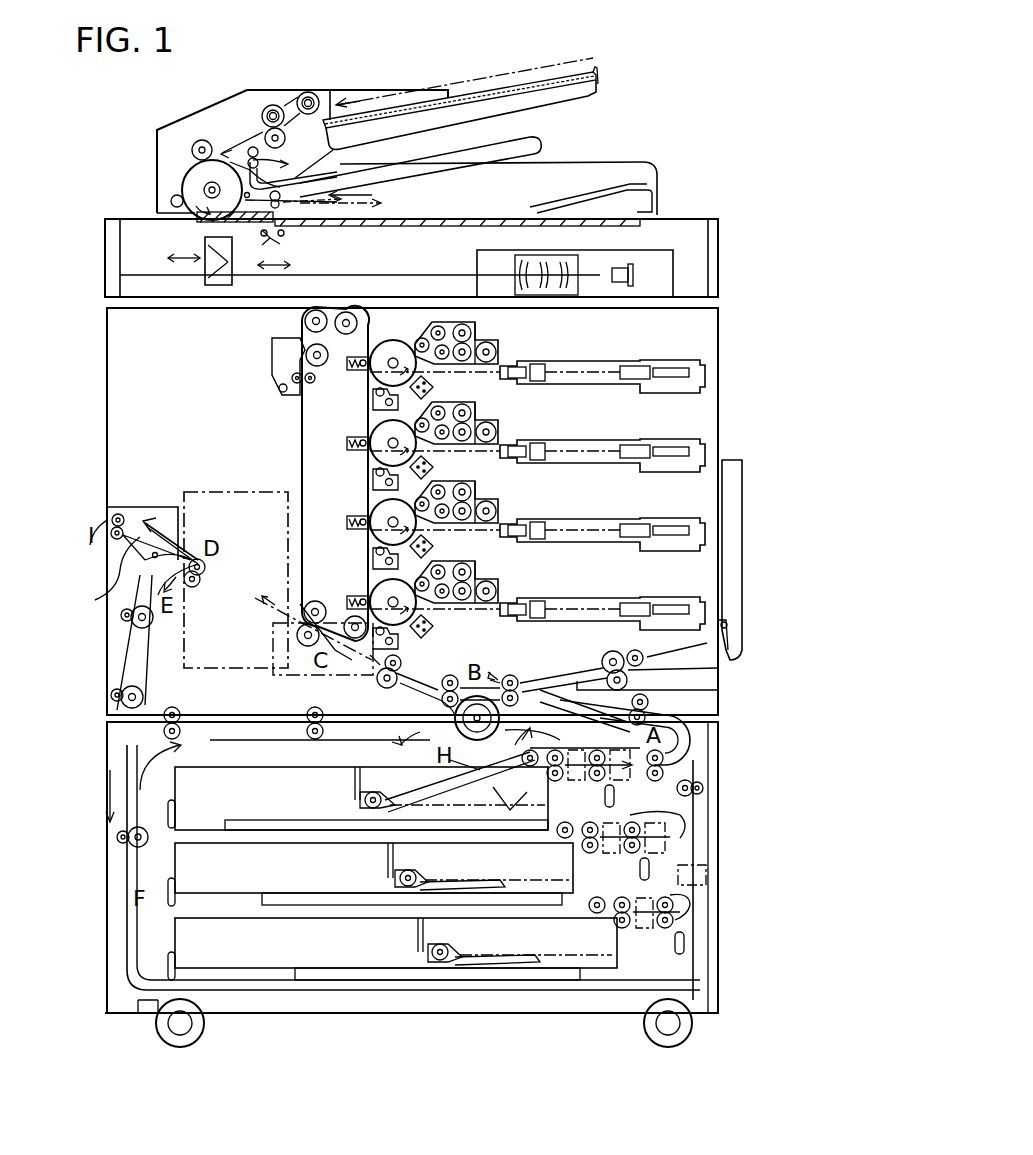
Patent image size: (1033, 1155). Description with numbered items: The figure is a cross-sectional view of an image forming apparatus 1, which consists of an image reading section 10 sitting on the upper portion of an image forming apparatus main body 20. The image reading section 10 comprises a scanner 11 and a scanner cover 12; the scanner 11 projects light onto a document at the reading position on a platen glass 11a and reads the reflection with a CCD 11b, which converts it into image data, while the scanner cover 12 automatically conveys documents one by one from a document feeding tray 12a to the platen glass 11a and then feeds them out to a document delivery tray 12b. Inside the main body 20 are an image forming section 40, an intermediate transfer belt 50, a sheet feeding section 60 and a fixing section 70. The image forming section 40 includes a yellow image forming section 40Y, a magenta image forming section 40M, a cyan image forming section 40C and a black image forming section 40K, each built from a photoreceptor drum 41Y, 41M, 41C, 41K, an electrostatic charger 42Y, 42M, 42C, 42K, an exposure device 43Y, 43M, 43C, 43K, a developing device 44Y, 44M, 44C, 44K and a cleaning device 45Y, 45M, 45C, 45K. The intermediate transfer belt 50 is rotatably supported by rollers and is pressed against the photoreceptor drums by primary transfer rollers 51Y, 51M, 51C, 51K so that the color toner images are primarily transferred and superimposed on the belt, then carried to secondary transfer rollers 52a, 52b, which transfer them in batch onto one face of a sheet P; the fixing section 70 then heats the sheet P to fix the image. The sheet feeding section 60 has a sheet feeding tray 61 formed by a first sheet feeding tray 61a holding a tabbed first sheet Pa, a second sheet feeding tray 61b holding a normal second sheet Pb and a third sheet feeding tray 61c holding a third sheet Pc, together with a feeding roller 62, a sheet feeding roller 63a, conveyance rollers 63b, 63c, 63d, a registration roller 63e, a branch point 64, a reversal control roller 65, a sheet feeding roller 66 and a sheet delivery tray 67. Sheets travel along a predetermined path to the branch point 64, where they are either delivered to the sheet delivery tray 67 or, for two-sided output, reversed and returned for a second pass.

The image forming apparatus 1 is at (138, 136).
The image reading section 10 is at (407, 258).
The scanner 11 is at (720, 228).
The platen glass 11a is at (620, 215).
The CCD 11b is at (680, 272).
The scanner cover 12 is at (212, 113).
The document feeding tray 12a is at (607, 55).
The document delivery tray 12b is at (530, 140).
The image forming apparatus main body 20 is at (97, 358).
The image forming section 40 is at (800, 352).
The yellow image forming section 40Y is at (712, 372).
The magenta image forming section 40M is at (712, 448).
The cyan image forming section 40C is at (708, 525).
The black image forming section 40K is at (702, 596).
The photoreceptor drum 41Y is at (393, 358).
The photoreceptor drum 41M is at (372, 440).
The photoreceptor drum 41C is at (372, 518).
The photoreceptor drum 41K is at (372, 590).
The electrostatic charger 42Y is at (433, 387).
The electrostatic charger 42M is at (433, 467).
The electrostatic charger 42C is at (433, 546).
The electrostatic charger 42K is at (433, 626).
The exposure device 43Y is at (615, 347).
The exposure device 43M is at (605, 424).
The exposure device 43C is at (608, 504).
The exposure device 43K is at (610, 584).
The developing device 44Y is at (498, 345).
The developing device 44M is at (498, 418).
The developing device 44C is at (498, 495).
The developing device 44K is at (498, 573).
The cleaning device 45Y is at (373, 405).
The cleaning device 45M is at (373, 486).
The cleaning device 45C is at (373, 565).
The cleaning device 45K is at (400, 645).
The intermediate transfer belt 50 is at (302, 443).
The primary transfer roller 51Y is at (348, 366).
The primary transfer roller 51M is at (348, 446).
The primary transfer roller 51C is at (348, 525).
The primary transfer roller 51K is at (348, 604).
The secondary transfer roller 52a is at (300, 604).
The secondary transfer roller 52b is at (297, 638).
The sheet feeding section 60 is at (97, 803).
The sheet feeding tray 61 is at (309, 868).
The first sheet feeding tray 61a is at (185, 828).
The second sheet feeding tray 61b is at (185, 902).
The third sheet feeding tray 61c is at (185, 938).
The feeding roller 62 is at (520, 750).
The sheet feeding roller 63a is at (708, 747).
The conveyance roller 63b is at (718, 692).
The conveyance roller 63c is at (515, 680).
The conveyance roller 63d is at (446, 678).
The registration roller 63e is at (375, 683).
The branch point 64 is at (107, 603).
The reversal control roller 65 is at (115, 850).
The sheet feeding roller 66 is at (122, 513).
The sheet delivery tray 67 is at (87, 548).
The fixing section 70 is at (205, 485).
The sheet P is at (460, 931).
The first sheet Pa is at (500, 772).
The second sheet Pb is at (418, 882).
The third sheet Pc is at (458, 960).